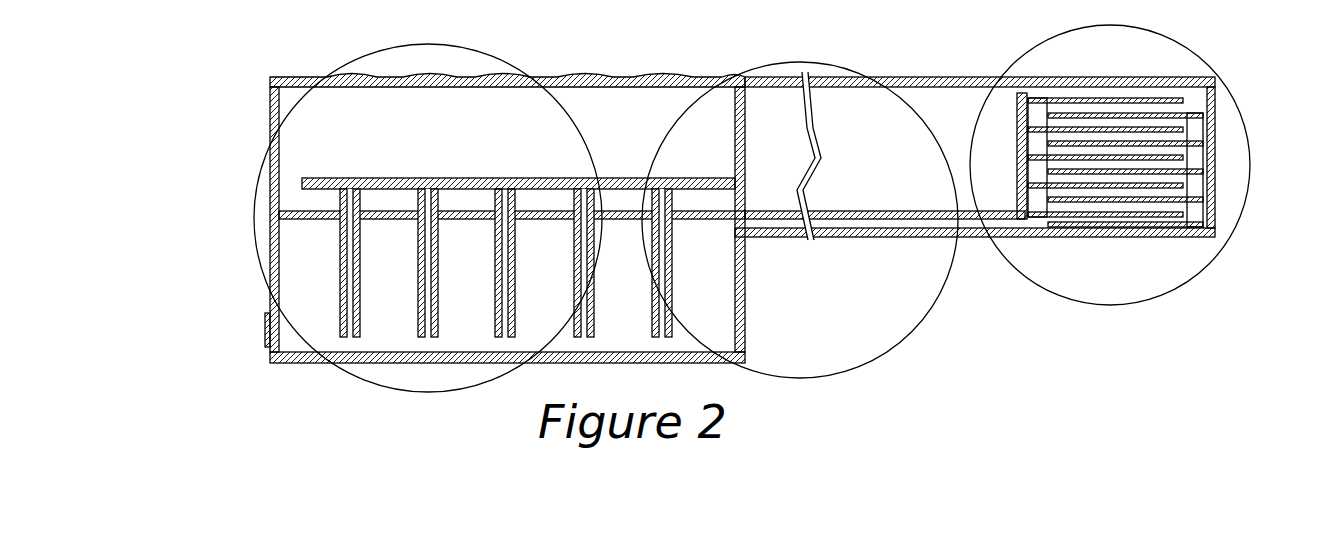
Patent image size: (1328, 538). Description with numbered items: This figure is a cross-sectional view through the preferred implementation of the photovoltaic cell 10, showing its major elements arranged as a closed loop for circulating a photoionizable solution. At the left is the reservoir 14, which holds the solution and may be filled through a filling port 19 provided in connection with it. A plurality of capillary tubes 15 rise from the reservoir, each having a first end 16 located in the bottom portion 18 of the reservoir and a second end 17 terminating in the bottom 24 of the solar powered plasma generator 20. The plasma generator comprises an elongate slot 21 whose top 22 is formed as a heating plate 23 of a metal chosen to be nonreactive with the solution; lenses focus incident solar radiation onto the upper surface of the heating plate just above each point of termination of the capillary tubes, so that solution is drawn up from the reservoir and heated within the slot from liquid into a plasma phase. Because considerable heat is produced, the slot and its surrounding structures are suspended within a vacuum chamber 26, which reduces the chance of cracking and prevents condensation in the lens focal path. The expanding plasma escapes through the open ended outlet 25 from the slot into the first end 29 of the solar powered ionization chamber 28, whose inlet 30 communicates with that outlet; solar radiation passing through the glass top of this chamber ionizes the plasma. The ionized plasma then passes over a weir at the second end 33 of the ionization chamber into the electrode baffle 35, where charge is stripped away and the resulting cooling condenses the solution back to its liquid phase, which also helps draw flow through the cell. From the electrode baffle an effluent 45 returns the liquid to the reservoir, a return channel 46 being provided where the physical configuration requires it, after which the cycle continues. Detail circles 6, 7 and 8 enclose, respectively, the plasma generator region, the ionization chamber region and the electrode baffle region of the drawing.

The first section detail circle 6 is at (465, 50).
The second section detail circle 7 is at (838, 372).
The heat exchanger detail circle 8 is at (1148, 302).
The photovoltaic cell 10 is at (1140, 184).
The reservoir 14 is at (385, 333).
The capillary tubes 15 is at (340, 297).
The first end 16 is at (453, 319).
The second end 17 is at (490, 200).
The bottom portion 18 is at (642, 312).
The filling port 19 is at (265, 335).
The solar powered plasma generator 20 is at (530, 247).
The elongate slot 21 is at (390, 189).
The top 22 is at (518, 206).
The heating plate 23 is at (518, 208).
The bottom 24 is at (447, 199).
The open ended outlet 25 is at (812, 219).
The vacuum chamber 26 is at (342, 162).
The solar powered ionization chamber 28 is at (975, 181).
The first end 29 is at (940, 180).
The inlet 30 is at (752, 195).
The second end 33 is at (990, 237).
The electrode baffle 35 is at (1115, 243).
The effluent 45 is at (1037, 220).
The return channel 46 is at (900, 225).